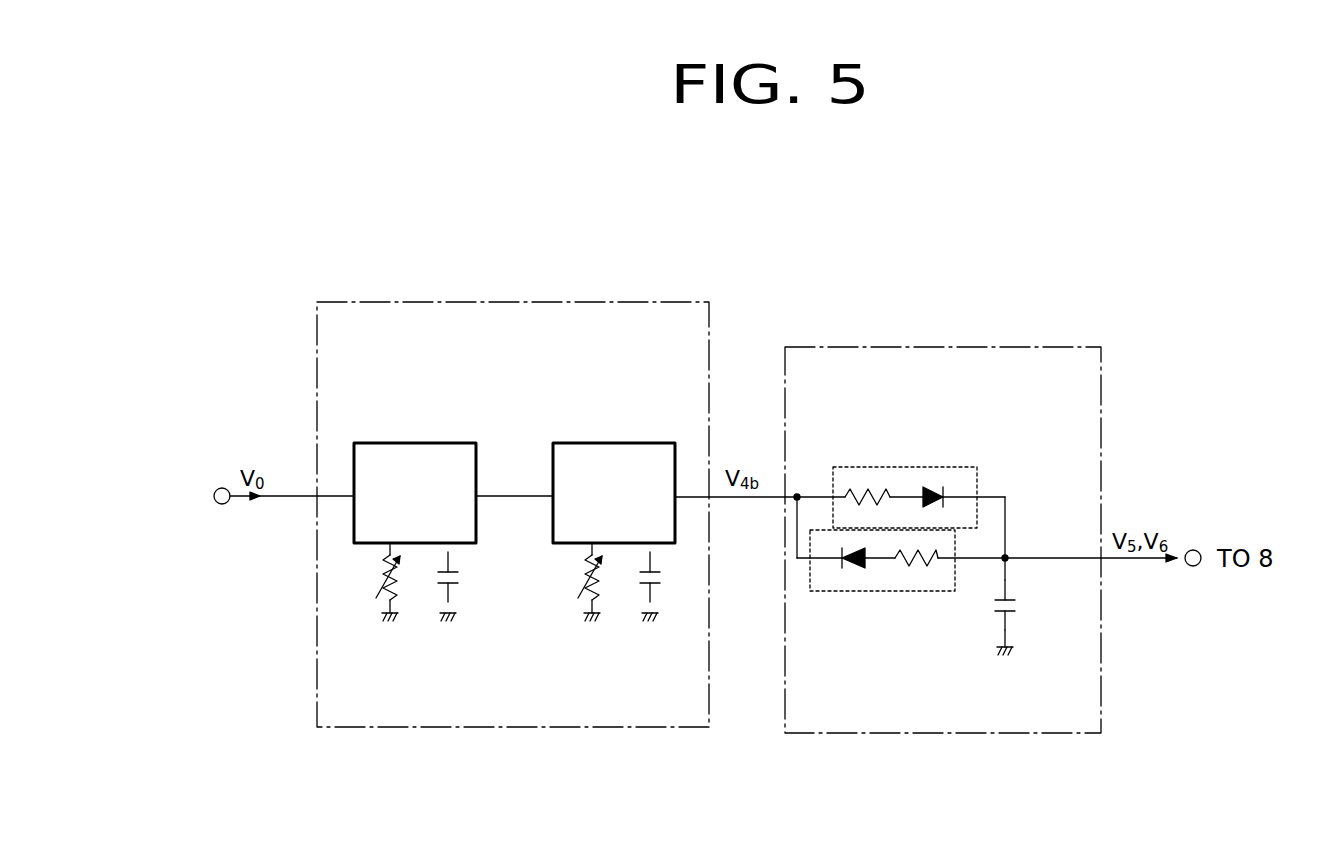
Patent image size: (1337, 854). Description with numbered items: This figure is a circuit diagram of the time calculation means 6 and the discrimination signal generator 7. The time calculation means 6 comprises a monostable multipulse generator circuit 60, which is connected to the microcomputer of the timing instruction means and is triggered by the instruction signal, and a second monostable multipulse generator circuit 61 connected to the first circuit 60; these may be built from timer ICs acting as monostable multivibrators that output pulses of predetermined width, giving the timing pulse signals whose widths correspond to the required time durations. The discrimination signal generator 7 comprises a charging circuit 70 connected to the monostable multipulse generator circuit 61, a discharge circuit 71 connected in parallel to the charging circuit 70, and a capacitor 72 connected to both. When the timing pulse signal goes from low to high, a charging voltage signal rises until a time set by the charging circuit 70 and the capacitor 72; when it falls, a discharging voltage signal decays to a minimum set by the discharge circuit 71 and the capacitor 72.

The time calculation means 6 is at (470, 302).
The discrimination signal generator 7 is at (890, 347).
The monostable multipulse generator circuit 60 is at (417, 443).
The monostable multipulse generator circuit 61 is at (612, 443).
The charging circuit 70 is at (898, 462).
The discharge circuit 71 is at (873, 592).
The capacitor 72 is at (1018, 606).